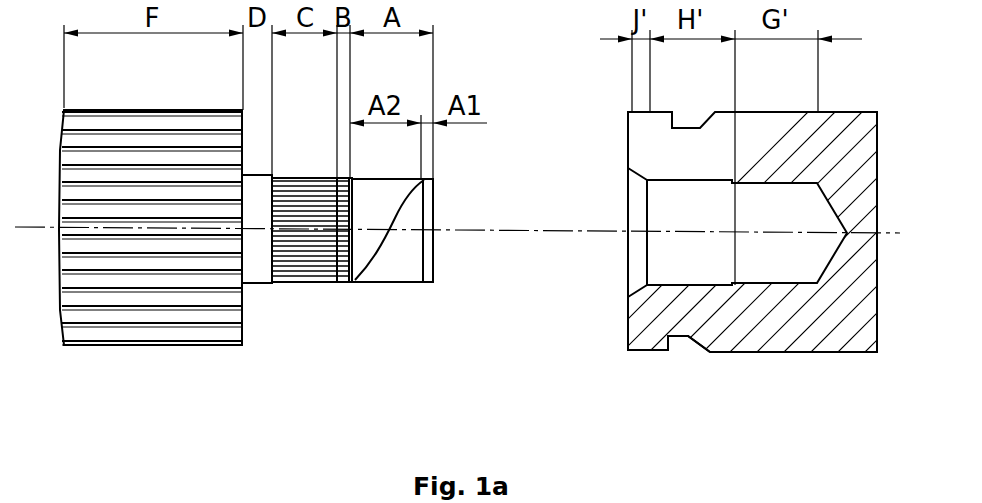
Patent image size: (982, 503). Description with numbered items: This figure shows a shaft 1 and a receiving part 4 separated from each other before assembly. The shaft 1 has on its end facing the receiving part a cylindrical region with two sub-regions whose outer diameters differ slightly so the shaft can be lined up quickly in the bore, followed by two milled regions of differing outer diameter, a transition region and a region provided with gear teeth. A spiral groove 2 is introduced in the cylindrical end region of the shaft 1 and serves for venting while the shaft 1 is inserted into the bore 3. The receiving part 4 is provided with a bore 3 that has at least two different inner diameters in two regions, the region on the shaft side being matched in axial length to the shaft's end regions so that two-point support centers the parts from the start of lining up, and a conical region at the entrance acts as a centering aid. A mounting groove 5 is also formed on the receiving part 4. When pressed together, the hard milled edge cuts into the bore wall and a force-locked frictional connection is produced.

The shaft 1 is at (258, 332).
The spiral groove 2 is at (378, 258).
The bore 3 is at (767, 243).
The receiving part 4 is at (800, 312).
The mounting groove 5 is at (687, 334).